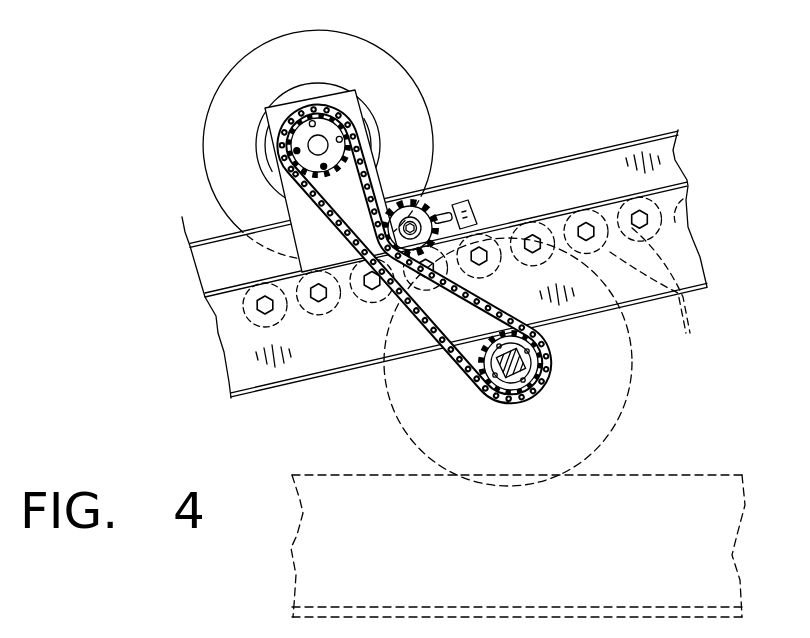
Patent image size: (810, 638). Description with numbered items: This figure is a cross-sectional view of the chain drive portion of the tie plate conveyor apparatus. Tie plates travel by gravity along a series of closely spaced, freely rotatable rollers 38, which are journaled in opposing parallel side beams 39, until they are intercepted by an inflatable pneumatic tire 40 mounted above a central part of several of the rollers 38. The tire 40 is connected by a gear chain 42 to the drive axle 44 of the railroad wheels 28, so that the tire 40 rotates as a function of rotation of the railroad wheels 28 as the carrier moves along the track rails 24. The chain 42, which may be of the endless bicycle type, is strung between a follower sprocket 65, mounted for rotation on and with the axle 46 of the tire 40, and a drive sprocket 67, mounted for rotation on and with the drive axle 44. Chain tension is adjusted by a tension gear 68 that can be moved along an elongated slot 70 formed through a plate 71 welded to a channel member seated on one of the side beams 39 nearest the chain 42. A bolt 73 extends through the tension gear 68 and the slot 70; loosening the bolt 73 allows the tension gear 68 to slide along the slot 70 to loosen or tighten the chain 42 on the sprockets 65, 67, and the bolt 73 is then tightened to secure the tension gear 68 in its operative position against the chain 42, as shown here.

The inflatable pneumatic tire 40 is at (362, 34).
The axle 46 is at (325, 138).
The tension gear 68 is at (430, 208).
The elongated slot 70 is at (440, 210).
The plate 71 is at (473, 205).
The bolt 73 is at (427, 203).
The follower sprocket 65 is at (335, 182).
The side beams 39 is at (230, 364).
The gear chain 42 is at (393, 345).
The rollers 38 is at (687, 333).
The drive sprocket 67 is at (480, 330).
The drive axle 44 is at (550, 373).
The railroad wheels 28 is at (402, 412).
The track rails 24 is at (688, 472).